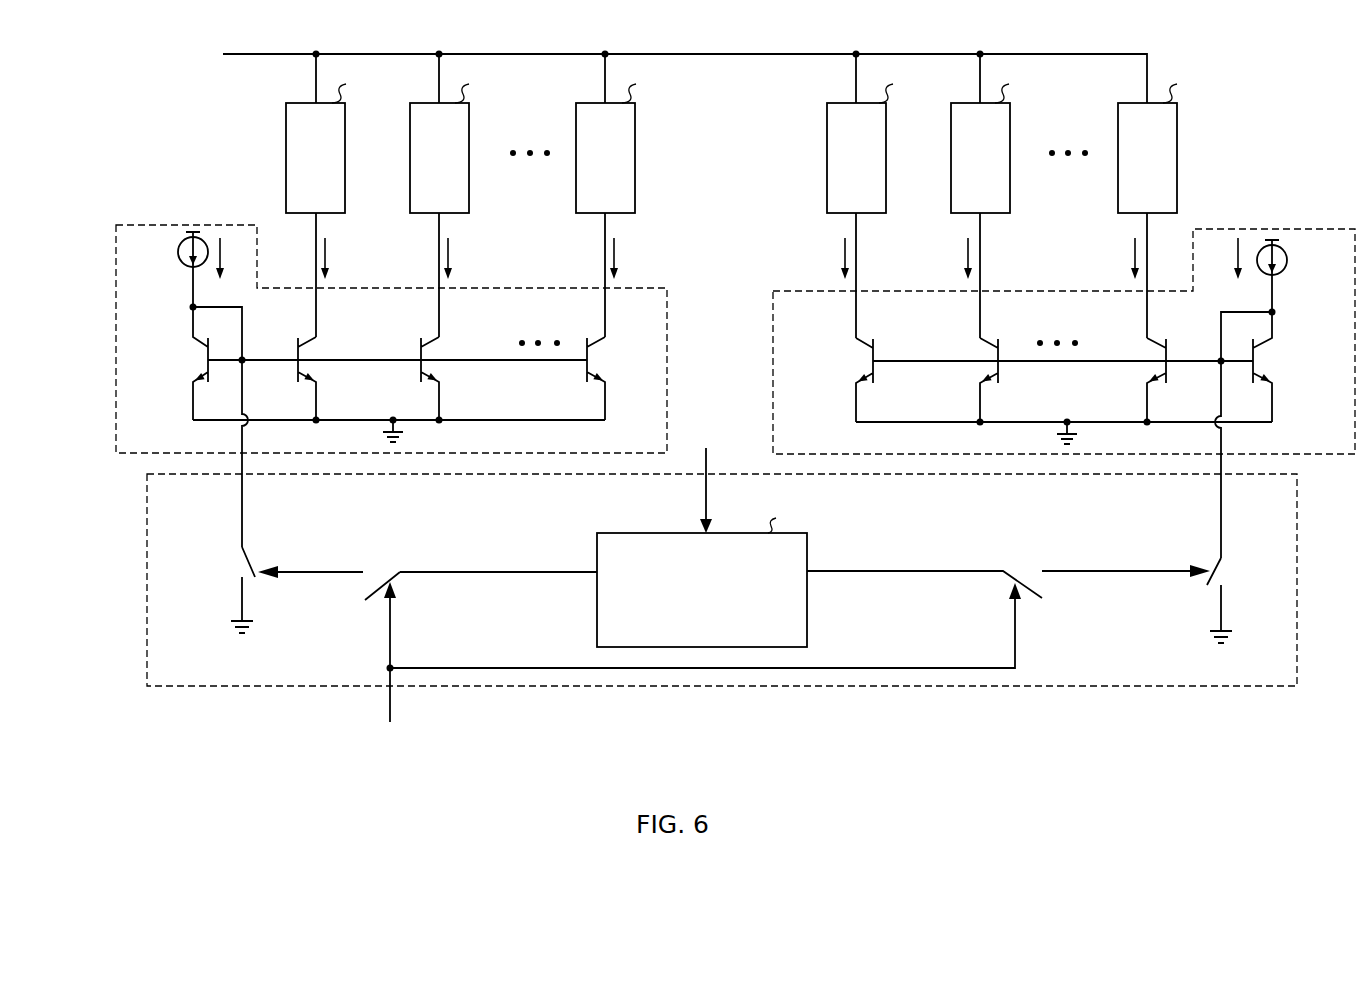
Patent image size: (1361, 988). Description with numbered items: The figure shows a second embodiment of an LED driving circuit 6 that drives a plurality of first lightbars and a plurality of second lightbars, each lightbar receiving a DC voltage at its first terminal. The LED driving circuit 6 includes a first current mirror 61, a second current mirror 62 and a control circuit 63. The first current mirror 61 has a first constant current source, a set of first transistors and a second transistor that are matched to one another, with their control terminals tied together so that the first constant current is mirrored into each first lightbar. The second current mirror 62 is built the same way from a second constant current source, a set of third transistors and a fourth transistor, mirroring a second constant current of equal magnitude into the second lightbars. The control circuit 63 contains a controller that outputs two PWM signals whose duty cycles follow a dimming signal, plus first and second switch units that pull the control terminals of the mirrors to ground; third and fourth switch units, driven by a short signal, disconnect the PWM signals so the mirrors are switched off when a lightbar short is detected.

The LED driving circuit 6 is at (111, 766).
The first current mirror 61 is at (114, 402).
The second current mirror 62 is at (1333, 456).
The control circuit 63 is at (1298, 612).